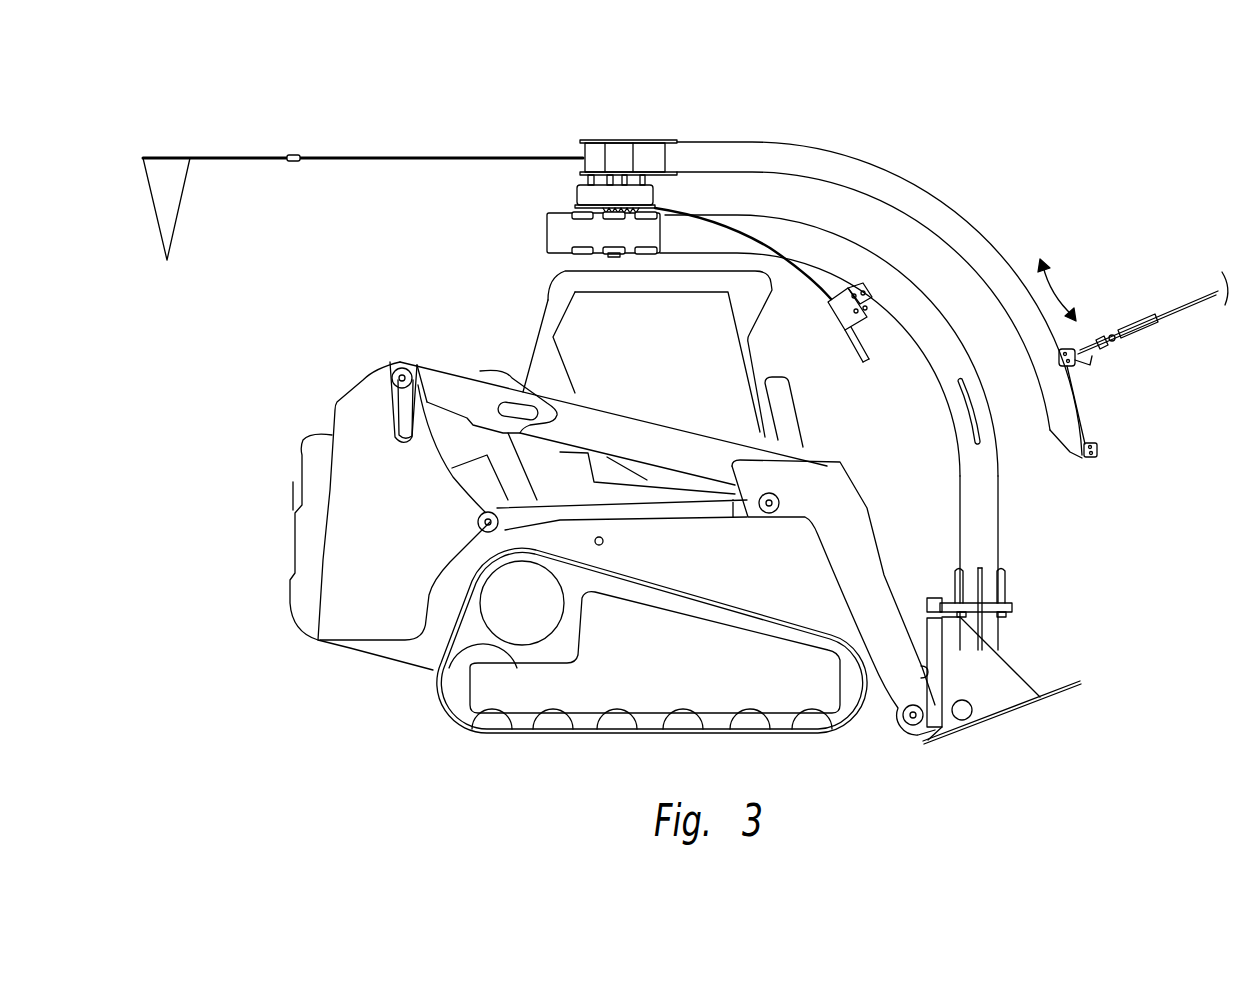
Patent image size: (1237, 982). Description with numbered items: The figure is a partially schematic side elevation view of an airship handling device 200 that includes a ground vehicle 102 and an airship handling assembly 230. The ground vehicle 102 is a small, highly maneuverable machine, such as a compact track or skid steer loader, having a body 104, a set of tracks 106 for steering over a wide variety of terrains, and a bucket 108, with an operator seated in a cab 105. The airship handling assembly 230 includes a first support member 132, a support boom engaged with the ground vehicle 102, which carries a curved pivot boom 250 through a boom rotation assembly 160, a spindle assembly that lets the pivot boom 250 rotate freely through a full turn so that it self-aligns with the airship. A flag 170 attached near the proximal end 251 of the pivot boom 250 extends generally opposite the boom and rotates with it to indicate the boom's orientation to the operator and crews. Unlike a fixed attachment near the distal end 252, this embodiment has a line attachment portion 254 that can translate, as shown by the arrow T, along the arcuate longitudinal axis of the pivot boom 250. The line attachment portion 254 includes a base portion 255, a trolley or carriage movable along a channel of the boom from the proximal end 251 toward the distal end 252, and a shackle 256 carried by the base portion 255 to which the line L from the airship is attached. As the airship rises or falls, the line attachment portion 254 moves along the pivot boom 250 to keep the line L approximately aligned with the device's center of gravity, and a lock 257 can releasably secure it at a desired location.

The ground vehicle 102 is at (322, 388).
The body 104 is at (345, 553).
The cab 105 is at (758, 320).
The tracks 106 is at (628, 740).
The bucket 108 is at (1000, 692).
The first support member 132 is at (998, 533).
The boom rotation assembly 160 is at (578, 193).
The flag 170 is at (240, 159).
The airship handling device 200 is at (1072, 128).
The airship handling assembly 230 is at (993, 208).
The pivot boom 250 is at (996, 252).
The proximal end 251 is at (673, 150).
The distal end 252 is at (1079, 458).
The line attachment portion 254 is at (1121, 314).
The base portion 255 is at (1077, 378).
The shackle 256 is at (1087, 366).
The lock 257 is at (1067, 358).
The line L is at (1196, 320).
The arrow T is at (1063, 290).